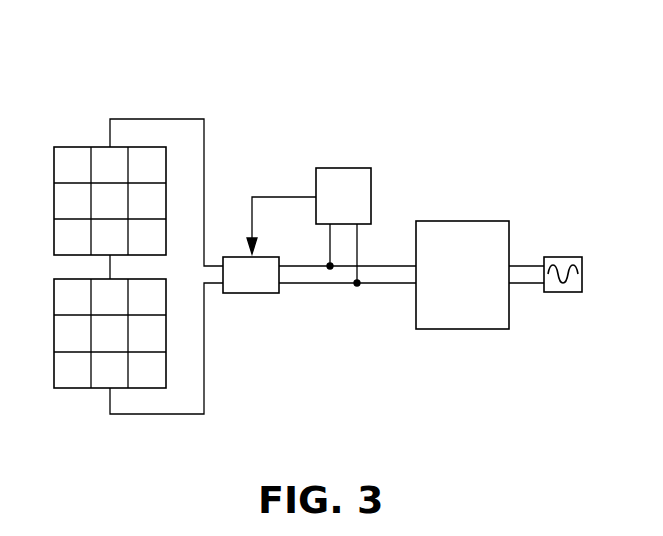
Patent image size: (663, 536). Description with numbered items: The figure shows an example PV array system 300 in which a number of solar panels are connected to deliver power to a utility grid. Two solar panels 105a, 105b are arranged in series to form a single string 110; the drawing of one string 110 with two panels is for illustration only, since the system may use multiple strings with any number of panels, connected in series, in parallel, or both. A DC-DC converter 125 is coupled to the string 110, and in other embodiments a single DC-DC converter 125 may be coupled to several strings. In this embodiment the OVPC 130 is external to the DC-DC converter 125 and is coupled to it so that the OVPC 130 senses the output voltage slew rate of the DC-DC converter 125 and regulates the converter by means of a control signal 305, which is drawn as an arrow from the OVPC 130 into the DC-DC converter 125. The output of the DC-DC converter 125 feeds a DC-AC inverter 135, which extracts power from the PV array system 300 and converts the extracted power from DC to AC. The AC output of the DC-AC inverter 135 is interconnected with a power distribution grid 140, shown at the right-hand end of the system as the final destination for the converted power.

The string 110 is at (108, 80).
The solar panel 105a is at (77, 146).
The solar panel 105b is at (69, 389).
The DC-DC converter 125 is at (257, 294).
The OVPC 130 is at (350, 167).
The control signal 305 is at (275, 195).
The DC-AC inverter 135 is at (471, 330).
The power distribution grid 140 is at (558, 293).
The PV array system 300 is at (478, 100).